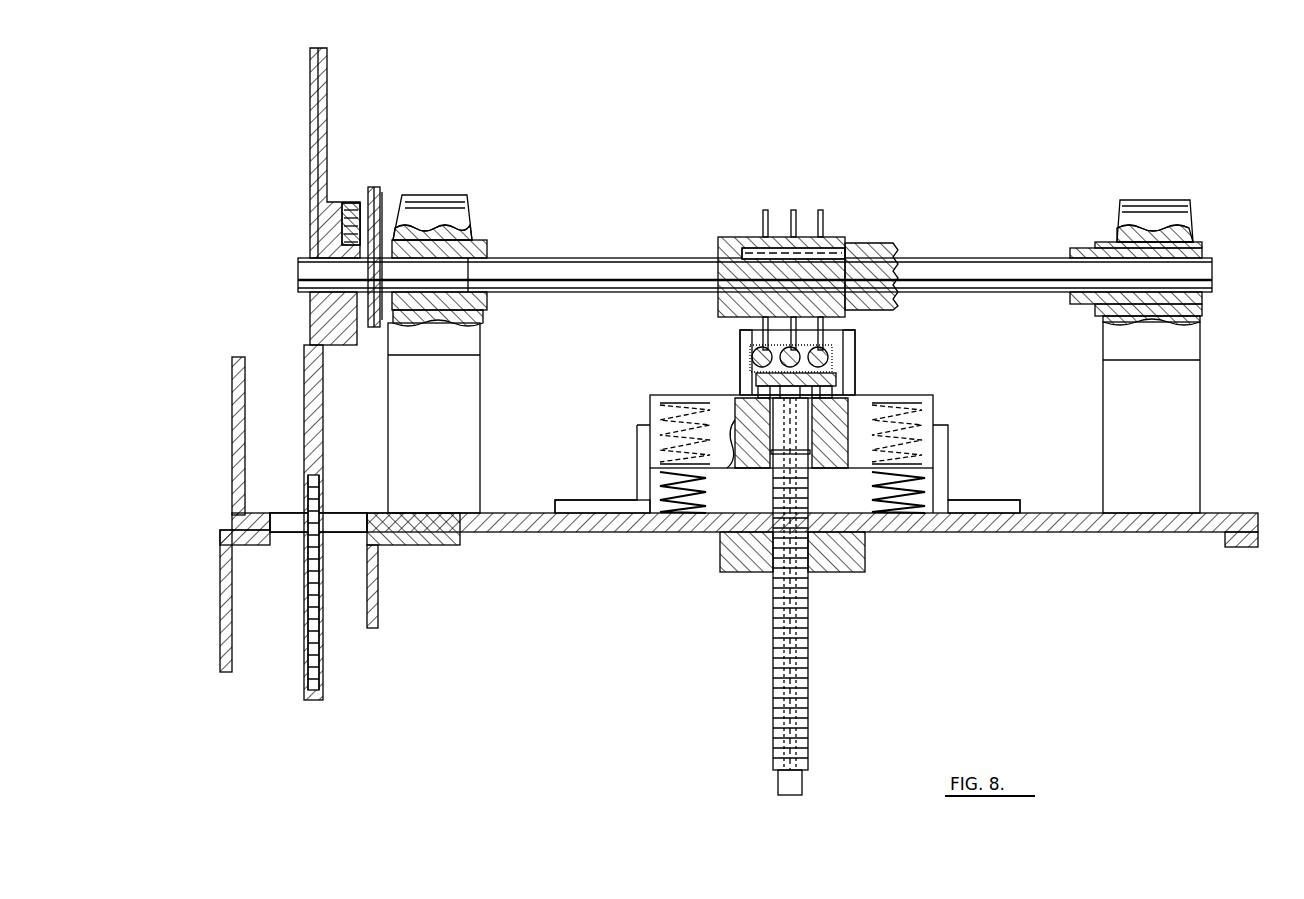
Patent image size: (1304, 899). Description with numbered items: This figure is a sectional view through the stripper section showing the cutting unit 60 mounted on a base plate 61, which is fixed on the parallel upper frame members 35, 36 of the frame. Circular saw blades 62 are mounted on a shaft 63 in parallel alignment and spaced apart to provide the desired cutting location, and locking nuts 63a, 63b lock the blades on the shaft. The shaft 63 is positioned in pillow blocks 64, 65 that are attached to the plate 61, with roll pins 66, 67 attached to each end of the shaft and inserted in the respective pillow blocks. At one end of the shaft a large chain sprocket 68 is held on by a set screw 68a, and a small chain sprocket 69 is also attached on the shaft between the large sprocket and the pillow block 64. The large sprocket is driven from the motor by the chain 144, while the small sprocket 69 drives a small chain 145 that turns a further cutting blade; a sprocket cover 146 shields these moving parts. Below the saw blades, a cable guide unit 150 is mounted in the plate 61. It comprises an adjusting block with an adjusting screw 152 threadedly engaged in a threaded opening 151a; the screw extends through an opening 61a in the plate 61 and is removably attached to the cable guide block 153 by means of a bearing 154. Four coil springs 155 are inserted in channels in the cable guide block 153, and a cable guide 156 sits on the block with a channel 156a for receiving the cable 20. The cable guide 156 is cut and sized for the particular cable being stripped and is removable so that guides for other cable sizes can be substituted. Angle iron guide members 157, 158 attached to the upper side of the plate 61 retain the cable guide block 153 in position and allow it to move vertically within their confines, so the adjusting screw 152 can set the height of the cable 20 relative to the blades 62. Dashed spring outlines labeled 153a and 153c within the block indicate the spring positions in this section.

The cable 20 is at (836, 377).
The frame member 35 is at (226, 585).
The frame member 36 is at (1242, 548).
The cutting unit 60 is at (1213, 410).
The base plate 61 is at (1065, 540).
The opening in plate 61a is at (810, 503).
The circular saw blades 62 is at (830, 192).
The shaft 63 is at (632, 272).
The locking nut 63a is at (848, 240).
The locking nut 63b is at (882, 245).
The pillow block 64 is at (460, 445).
The pillow block 65 is at (1200, 468).
The roll pin 66 is at (490, 250).
The roll pin 67 is at (1085, 245).
The large chain sprocket 68 is at (318, 80).
The set screw 68a is at (345, 205).
The small chain sprocket 69 is at (381, 195).
The chain 144 is at (322, 657).
The small chain 145 is at (372, 190).
The sprocket cover 146 is at (235, 440).
The cable guide unit 150 is at (962, 460).
The threaded opening 151a is at (782, 575).
The adjusting screw 152 is at (790, 662).
The cable guide block 153 is at (925, 400).
The left spring 153a is at (672, 415).
The right spring 153c is at (935, 412).
The bearing 154 is at (832, 392).
The coil springs 155 is at (700, 492).
The cable guide 156 is at (850, 345).
The channel 156a is at (760, 345).
The angle iron guide member 157 is at (610, 510).
The angle iron guide member 158 is at (1010, 505).